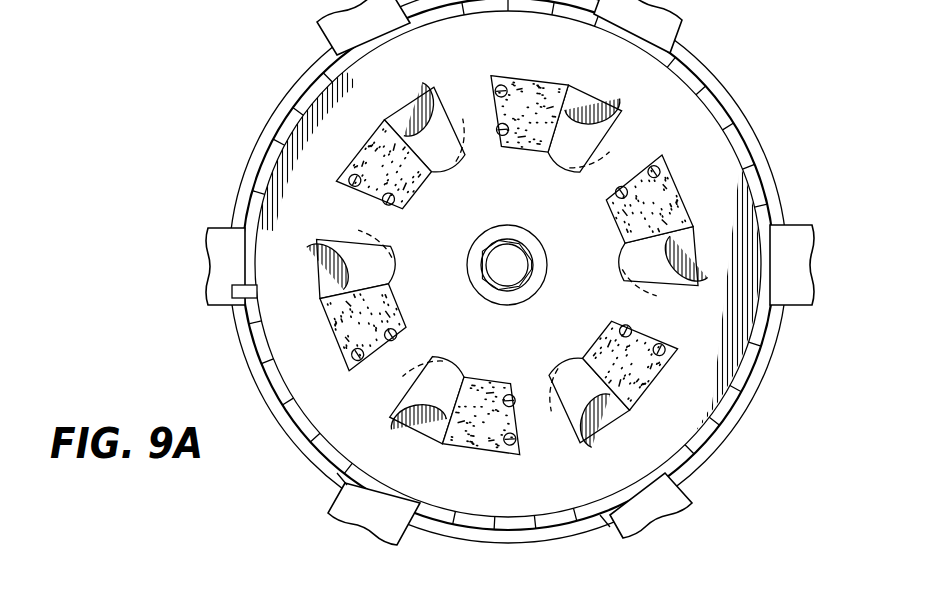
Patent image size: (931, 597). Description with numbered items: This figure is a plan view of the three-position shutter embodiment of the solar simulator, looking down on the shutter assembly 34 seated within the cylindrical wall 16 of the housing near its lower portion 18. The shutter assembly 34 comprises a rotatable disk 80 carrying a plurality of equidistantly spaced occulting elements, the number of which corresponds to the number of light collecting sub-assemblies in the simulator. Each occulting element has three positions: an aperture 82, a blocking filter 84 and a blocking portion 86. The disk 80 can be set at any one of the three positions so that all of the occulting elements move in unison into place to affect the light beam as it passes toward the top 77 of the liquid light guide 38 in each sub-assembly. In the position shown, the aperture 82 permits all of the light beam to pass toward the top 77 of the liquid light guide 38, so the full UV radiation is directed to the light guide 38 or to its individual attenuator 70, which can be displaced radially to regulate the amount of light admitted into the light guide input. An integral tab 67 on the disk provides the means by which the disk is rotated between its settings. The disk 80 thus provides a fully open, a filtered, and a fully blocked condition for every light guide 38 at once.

The cylindrical wall 16 is at (717, 115).
The lower portion 18 is at (697, 73).
The shutter assembly 34 is at (481, 61).
The liquid light guide 38 is at (624, 268).
The integral tab 67 is at (240, 292).
The attenuator 70 is at (434, 140).
The top of the liquid light guide 77 is at (572, 150).
The rotatable disk 80 is at (328, 408).
The aperture 82 is at (328, 267).
The blocking filter 84 is at (350, 325).
The blocking portion 86 is at (382, 385).